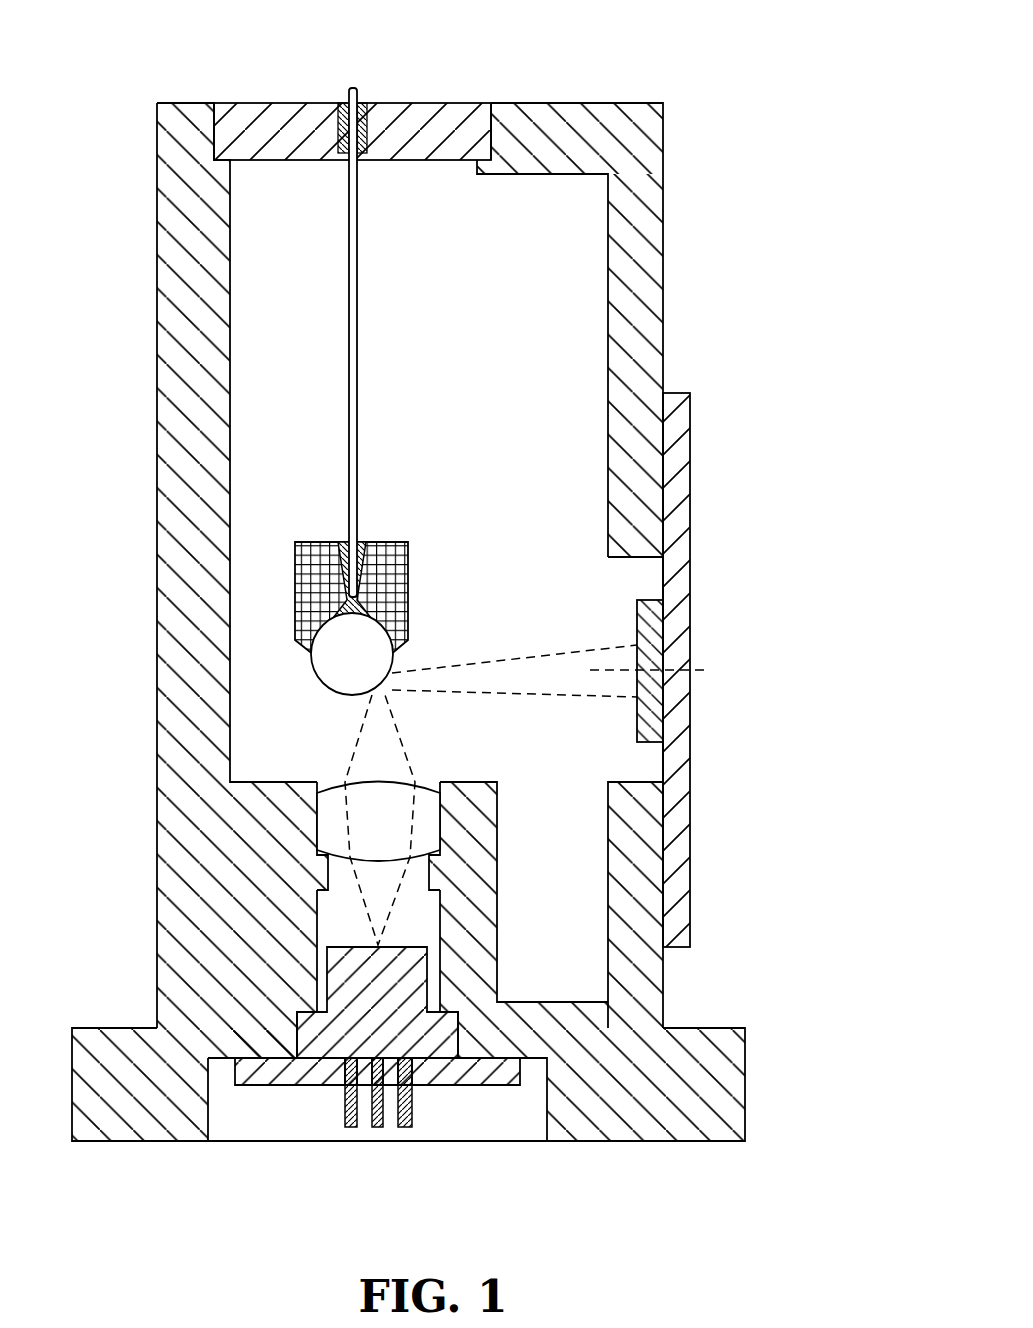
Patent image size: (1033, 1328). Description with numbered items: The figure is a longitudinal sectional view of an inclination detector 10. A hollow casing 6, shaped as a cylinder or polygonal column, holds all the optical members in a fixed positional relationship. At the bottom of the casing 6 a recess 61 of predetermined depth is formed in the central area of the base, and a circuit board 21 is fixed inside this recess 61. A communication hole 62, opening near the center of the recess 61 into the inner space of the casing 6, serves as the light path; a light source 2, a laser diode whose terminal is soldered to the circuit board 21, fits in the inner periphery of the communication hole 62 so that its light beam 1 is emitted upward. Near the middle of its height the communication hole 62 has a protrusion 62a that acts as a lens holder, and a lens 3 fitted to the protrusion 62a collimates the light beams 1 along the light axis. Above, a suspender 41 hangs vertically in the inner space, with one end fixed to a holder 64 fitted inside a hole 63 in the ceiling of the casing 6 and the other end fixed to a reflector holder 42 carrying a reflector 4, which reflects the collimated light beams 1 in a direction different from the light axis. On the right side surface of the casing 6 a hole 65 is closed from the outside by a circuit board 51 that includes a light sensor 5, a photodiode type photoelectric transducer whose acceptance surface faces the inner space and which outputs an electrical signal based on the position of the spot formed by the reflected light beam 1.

The inclination detector 10 is at (431, 620).
The casing 6 is at (433, 633).
The recess 61 is at (493, 1130).
The communication hole 62 is at (420, 923).
The protrusion 62a is at (437, 878).
The hole 63 is at (491, 128).
The holder 64 is at (410, 115).
The hole 65 is at (645, 560).
The light sensor 5 is at (657, 625).
The circuit board 51 is at (680, 755).
The reflector 4 is at (333, 665).
The suspender 41 is at (349, 368).
The reflector holder 42 is at (295, 592).
The lens 3 is at (360, 828).
The light source 2 is at (398, 1100).
The circuit board 21 is at (275, 1086).
The light beam 1 is at (465, 697).